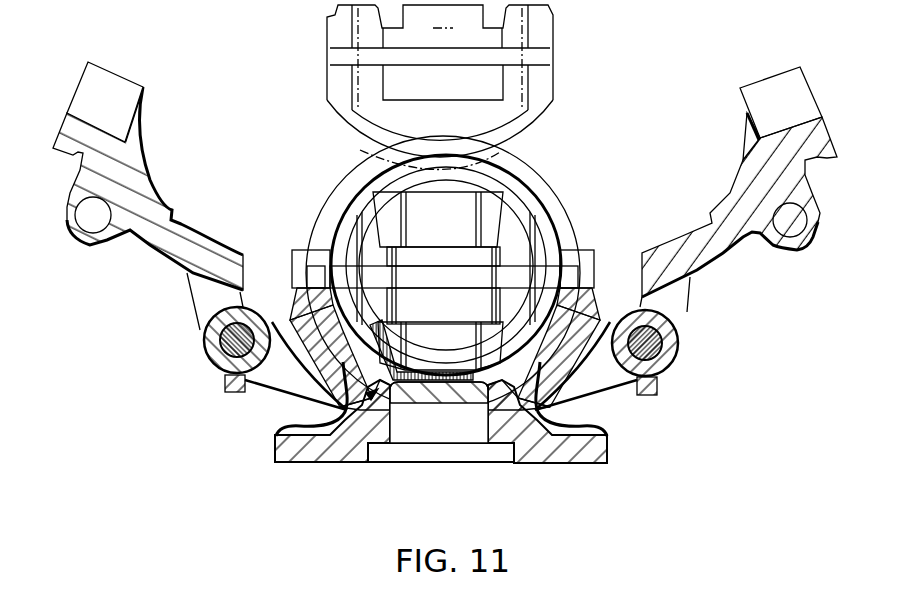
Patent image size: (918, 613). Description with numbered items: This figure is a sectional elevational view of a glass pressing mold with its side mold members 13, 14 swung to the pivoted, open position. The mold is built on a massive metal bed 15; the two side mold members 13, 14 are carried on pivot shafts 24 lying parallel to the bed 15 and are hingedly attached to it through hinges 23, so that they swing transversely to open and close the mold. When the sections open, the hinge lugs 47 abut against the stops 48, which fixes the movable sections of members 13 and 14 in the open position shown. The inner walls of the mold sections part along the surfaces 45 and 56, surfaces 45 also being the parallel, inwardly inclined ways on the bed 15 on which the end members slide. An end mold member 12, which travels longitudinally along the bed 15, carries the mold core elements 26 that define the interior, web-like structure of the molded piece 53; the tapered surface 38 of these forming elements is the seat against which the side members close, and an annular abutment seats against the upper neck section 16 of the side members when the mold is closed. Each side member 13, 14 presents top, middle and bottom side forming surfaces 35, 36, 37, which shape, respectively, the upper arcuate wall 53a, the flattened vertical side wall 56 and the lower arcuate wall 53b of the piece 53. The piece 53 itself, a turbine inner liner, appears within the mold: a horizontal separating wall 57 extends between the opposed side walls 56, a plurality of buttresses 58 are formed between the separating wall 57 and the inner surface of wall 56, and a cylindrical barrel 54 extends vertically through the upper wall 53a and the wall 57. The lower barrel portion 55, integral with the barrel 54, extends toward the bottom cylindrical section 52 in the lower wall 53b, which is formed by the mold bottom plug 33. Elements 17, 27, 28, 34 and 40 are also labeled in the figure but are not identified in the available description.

The end mold member 12 is at (560, 192).
The side mold member 13 is at (155, 177).
The side mold member 14 is at (727, 197).
The bed 15 is at (323, 467).
The upper neck section 16 is at (817, 93).
The hook notch 17 is at (810, 167).
The hinge 23 is at (623, 400).
The pivot shaft 24 is at (660, 345).
The mold core element 26 is at (441, 280).
The side bracket 27 is at (593, 257).
The bracket block 28 is at (570, 257).
The mold bottom plug 33 is at (439, 412).
The arm boss 34 is at (793, 223).
The top side forming surface 35 is at (753, 143).
The middle side forming surface 36 is at (730, 180).
The bottom side forming surface 37 is at (670, 233).
The tapered surface 38 is at (513, 197).
The spring 40 is at (580, 393).
The inclined ways 45 is at (437, 344).
The hinge lug 47 is at (660, 383).
The stop 48 is at (597, 403).
The bottom cylindrical section 52 is at (457, 377).
The turbine inner liner piece 53 is at (553, 80).
The upper arcuate wall 53a is at (343, 230).
The lower arcuate wall 53b is at (387, 305).
The cylindrical barrel 54 is at (438, 219).
The lower barrel portion 55 is at (440, 346).
The flat side wall 56 is at (640, 280).
The horizontal separating wall 57 is at (447, 280).
The buttress 58 is at (387, 310).